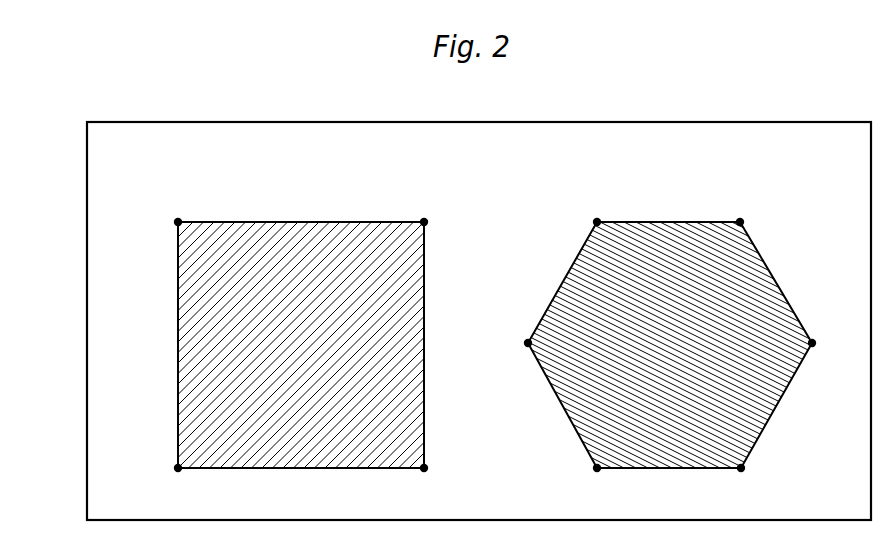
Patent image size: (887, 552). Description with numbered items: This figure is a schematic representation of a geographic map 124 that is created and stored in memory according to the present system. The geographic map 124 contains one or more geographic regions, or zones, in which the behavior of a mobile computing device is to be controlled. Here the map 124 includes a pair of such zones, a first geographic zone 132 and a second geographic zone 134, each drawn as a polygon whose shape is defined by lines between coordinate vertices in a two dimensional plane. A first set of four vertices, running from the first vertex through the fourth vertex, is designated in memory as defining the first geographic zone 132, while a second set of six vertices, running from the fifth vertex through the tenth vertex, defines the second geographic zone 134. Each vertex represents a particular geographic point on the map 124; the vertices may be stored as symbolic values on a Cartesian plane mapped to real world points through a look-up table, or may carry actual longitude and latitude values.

The geographic map 124 is at (193, 154).
The first geographic zone 132 is at (302, 222).
The second geographic zone 134 is at (667, 222).